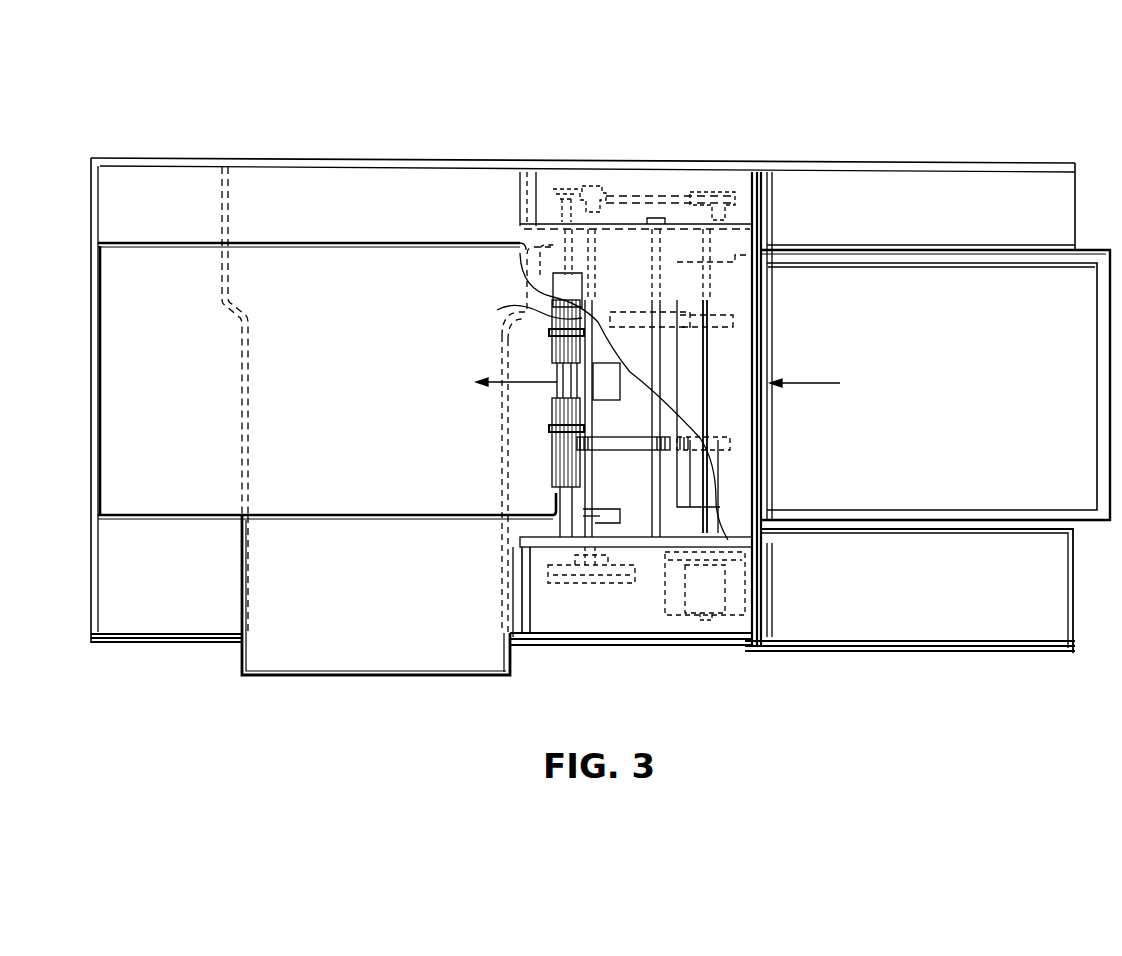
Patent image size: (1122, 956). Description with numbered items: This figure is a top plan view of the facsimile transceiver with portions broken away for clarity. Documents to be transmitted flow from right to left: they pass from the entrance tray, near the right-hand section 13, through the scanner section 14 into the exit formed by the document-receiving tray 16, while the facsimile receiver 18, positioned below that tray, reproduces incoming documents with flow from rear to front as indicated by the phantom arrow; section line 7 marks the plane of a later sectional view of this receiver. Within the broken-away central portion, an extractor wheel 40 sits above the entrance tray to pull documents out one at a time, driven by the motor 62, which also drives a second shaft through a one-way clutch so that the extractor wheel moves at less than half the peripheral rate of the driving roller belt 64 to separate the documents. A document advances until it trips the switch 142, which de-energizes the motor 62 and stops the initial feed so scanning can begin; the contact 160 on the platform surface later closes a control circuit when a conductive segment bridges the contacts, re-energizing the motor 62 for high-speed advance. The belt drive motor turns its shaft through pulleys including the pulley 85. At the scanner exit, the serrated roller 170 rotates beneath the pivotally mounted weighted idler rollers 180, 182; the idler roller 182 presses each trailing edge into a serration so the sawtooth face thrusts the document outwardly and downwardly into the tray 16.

The section line 7- 7 is at (400, 116).
The second housing section 13 is at (848, 155).
The scanner section 14 is at (600, 155).
The document-receiving tray 16 is at (235, 152).
The facsimile receiver 18 is at (369, 468).
The extractor wheel 40 is at (712, 462).
The motor 62 is at (667, 606).
The roller belt 64 is at (604, 446).
The pulley 85 is at (568, 583).
The switch 142 is at (604, 388).
The contact 160 is at (603, 512).
The serrated roller 170 is at (553, 410).
The weighted idler roller 180 is at (549, 430).
The weighted idler roller 182 is at (553, 325).